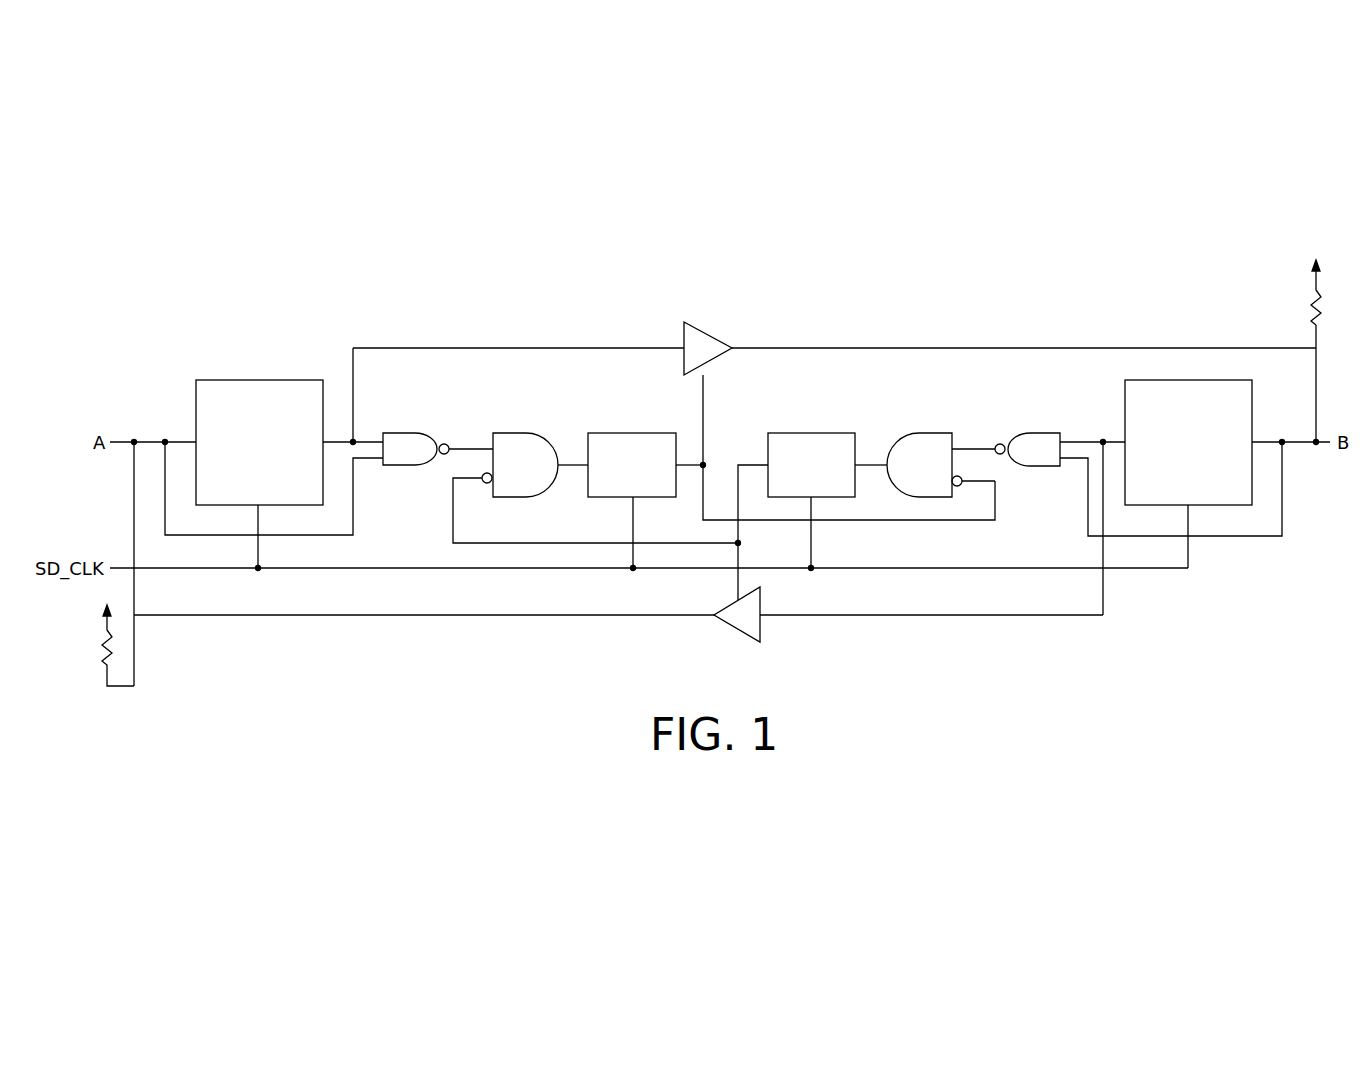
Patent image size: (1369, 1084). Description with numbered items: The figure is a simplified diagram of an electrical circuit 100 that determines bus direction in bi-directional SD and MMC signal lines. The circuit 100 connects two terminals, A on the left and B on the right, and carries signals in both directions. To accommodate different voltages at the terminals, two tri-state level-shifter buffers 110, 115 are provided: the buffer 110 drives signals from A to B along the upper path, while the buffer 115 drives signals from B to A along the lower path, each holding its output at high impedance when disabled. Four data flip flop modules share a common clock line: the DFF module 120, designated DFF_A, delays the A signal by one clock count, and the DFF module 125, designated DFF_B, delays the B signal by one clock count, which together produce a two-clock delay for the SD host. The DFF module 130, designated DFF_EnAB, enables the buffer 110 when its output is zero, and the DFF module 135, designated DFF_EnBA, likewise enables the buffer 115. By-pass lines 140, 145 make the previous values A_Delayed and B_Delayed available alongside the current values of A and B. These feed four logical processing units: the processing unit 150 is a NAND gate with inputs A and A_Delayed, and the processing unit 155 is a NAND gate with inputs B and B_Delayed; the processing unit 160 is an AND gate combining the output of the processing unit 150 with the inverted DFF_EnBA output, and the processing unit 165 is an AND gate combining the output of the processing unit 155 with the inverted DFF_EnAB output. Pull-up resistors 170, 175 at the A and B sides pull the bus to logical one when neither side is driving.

The electrical circuit 100 is at (483, 652).
The level-shifter buffer 110 is at (706, 334).
The level-shifter buffer 115 is at (735, 629).
The DFF module DFF_A 120 is at (262, 378).
The DFF module DFF_B 125 is at (1183, 378).
The DFF module DFF_EnAB 130 is at (640, 432).
The DFF module DFF_EnBA 135 is at (812, 432).
The by-pass line 140 is at (353, 515).
The by-pass line 145 is at (1088, 513).
The processing unit 150 is at (395, 432).
The processing unit 155 is at (1043, 432).
The processing unit 160 is at (505, 432).
The processing unit 165 is at (935, 432).
The pull-up resistor 170 is at (103, 647).
The pull-up resistor 175 is at (1321, 297).